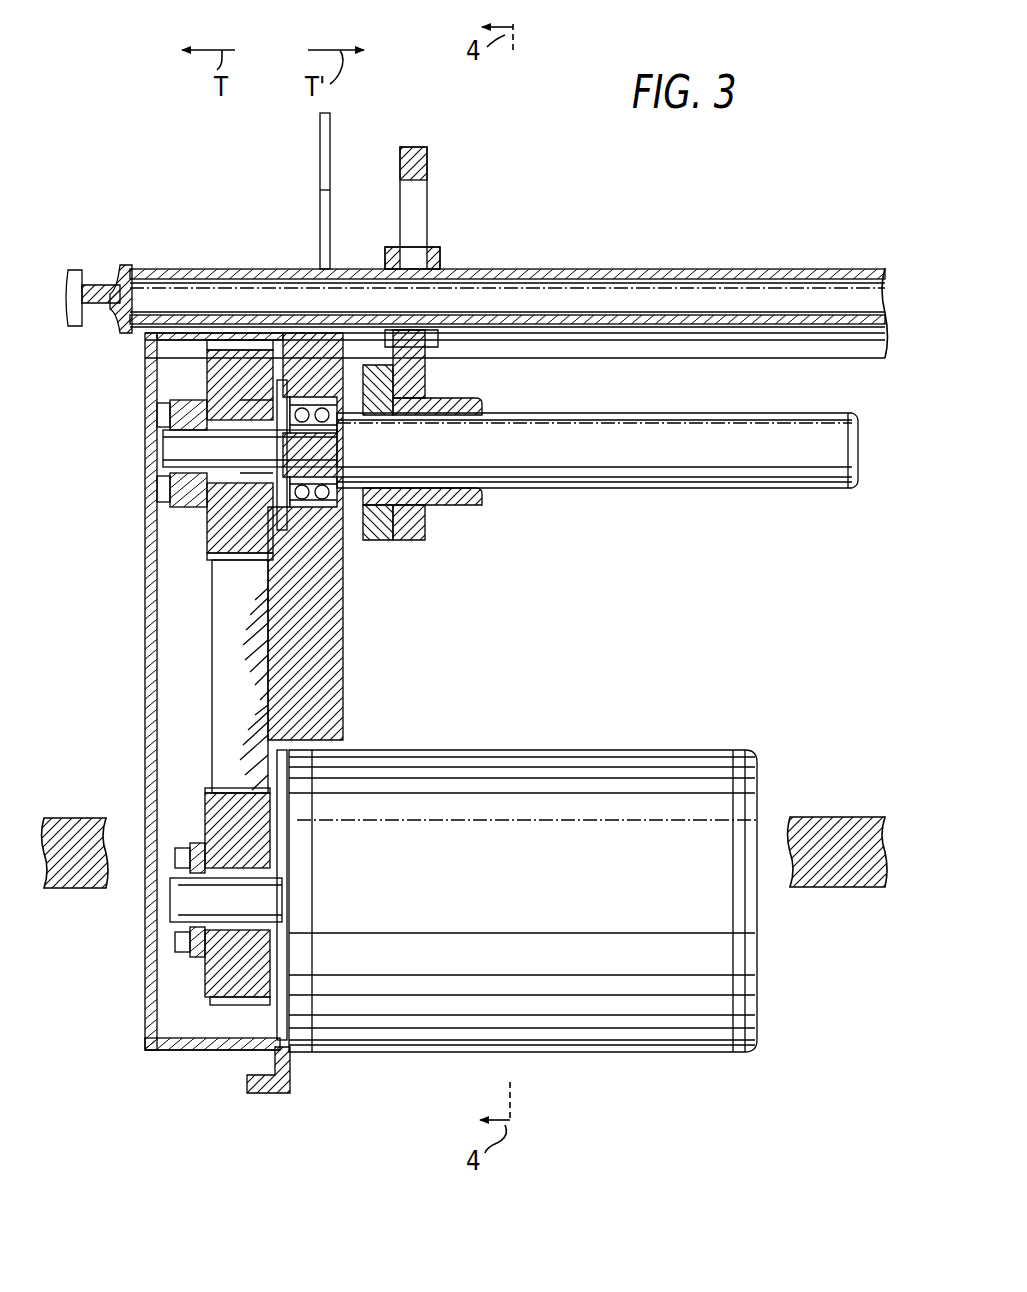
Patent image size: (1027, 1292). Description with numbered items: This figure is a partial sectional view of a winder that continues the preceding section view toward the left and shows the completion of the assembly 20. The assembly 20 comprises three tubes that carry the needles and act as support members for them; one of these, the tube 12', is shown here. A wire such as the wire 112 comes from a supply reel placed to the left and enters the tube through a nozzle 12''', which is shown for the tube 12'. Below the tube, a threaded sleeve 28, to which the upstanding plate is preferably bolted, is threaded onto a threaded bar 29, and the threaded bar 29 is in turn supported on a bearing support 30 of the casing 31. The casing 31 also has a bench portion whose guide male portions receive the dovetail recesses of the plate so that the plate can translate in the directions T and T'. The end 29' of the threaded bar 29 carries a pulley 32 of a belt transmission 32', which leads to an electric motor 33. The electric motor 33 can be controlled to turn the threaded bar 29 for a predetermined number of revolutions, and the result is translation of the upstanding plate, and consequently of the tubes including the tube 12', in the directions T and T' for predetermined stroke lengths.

The wire 112 is at (60, 301).
The nozzle 12''' is at (136, 272).
The tube 12' is at (509, 280).
The assembly 20 is at (632, 235).
The pulley 32 is at (177, 450).
The end of threaded bar 29' is at (203, 469).
The threaded bar 29 is at (597, 473).
The threaded sleeve 28 is at (390, 540).
The bearing support 30 is at (333, 556).
The belt transmission 32' is at (187, 782).
The electric motor 33 is at (517, 776).
The casing 31 is at (814, 818).